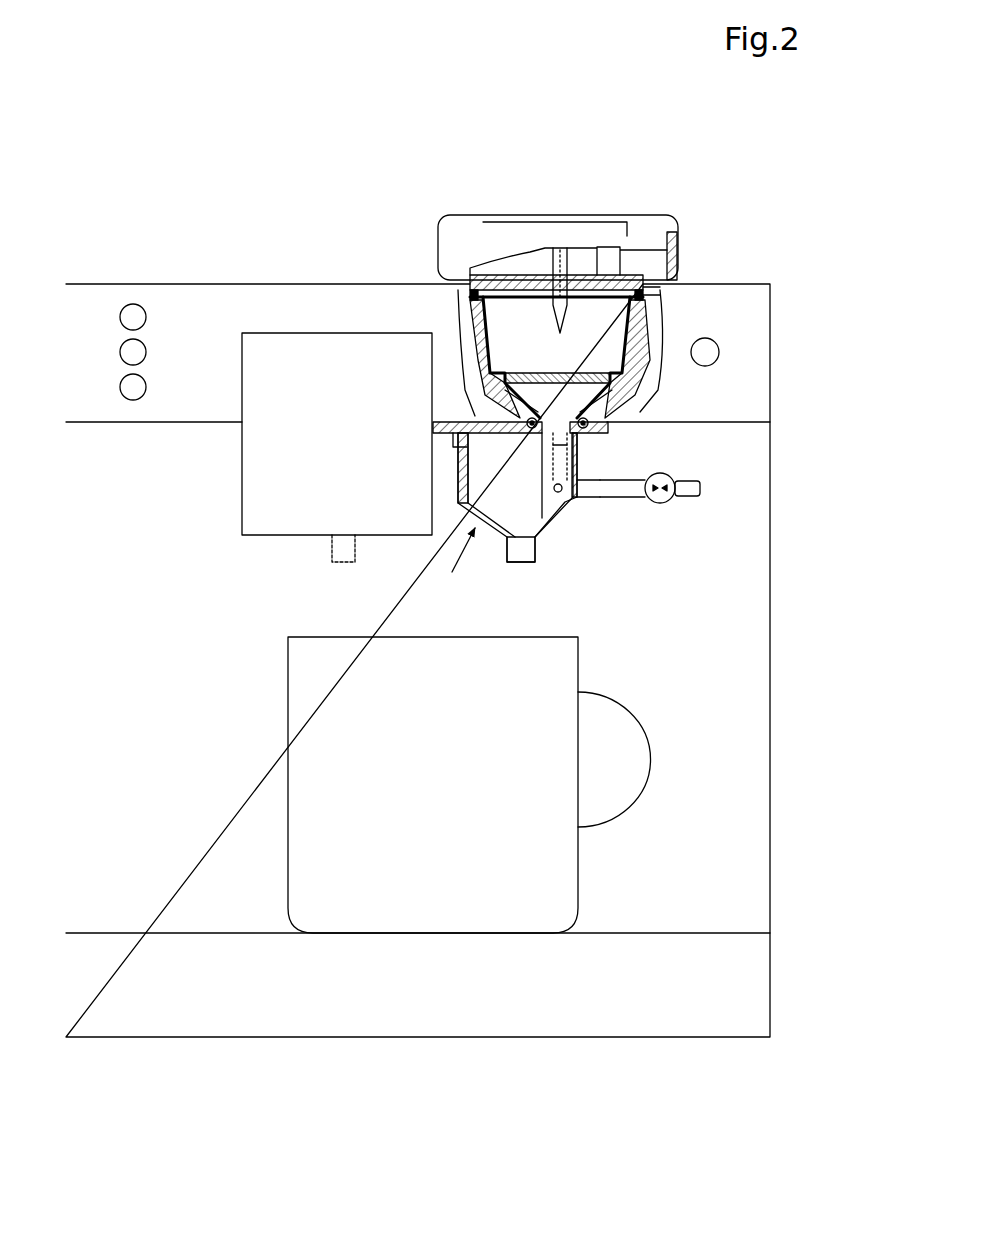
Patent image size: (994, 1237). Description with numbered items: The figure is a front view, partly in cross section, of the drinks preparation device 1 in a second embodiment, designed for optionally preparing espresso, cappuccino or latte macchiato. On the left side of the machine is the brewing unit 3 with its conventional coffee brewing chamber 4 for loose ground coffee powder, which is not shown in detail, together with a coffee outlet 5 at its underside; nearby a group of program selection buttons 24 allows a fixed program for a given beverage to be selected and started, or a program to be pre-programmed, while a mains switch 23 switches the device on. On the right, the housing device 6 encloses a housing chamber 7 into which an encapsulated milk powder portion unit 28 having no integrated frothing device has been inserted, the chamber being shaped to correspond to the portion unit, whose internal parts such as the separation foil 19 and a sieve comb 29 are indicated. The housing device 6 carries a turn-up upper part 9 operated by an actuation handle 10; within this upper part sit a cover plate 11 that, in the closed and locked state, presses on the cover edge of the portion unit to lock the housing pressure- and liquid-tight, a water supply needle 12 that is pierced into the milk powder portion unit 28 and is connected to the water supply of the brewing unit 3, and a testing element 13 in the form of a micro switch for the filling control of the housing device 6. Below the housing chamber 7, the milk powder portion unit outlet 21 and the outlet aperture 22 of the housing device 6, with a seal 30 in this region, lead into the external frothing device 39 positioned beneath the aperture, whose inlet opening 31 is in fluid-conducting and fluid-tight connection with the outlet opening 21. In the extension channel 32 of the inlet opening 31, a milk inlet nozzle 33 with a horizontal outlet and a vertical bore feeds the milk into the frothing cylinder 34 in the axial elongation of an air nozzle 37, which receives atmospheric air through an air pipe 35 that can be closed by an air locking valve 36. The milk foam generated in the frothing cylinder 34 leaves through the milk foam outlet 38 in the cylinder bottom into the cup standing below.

The drinks preparation device 1 is at (283, 220).
The brewing unit 3 is at (202, 302).
The coffee brewing chamber 4 is at (310, 380).
The coffee outlet 5 is at (338, 551).
The housing device 6 is at (482, 198).
The housing chamber 7 is at (660, 296).
The upper part 9 is at (610, 263).
The actuation handle 10 is at (592, 218).
The cover plate 11 is at (636, 308).
The water supply needle 12 is at (642, 230).
The testing element 13 is at (673, 277).
The separation foil 19 is at (517, 367).
The milk powder portion unit outlet 21 is at (505, 407).
The outlet aperture 22 is at (590, 420).
The mains switch 23 is at (720, 352).
The program selection buttons 24 is at (118, 318).
The milk powder portion unit without integrated frothing device 28 is at (573, 348).
The sieve comb 29 is at (606, 378).
The seal 30 is at (595, 421).
The frothing device inlet opening 31 is at (583, 442).
The extension channel 32 is at (560, 450).
The milk inlet nozzle 33 is at (575, 500).
The frothing cylinder 34 is at (585, 493).
The air pipe 35 is at (677, 487).
The air locking valve 36 is at (573, 488).
The air nozzle 37 is at (598, 492).
The milk foam outlet 38 is at (522, 552).
The frothing device 39 is at (453, 565).